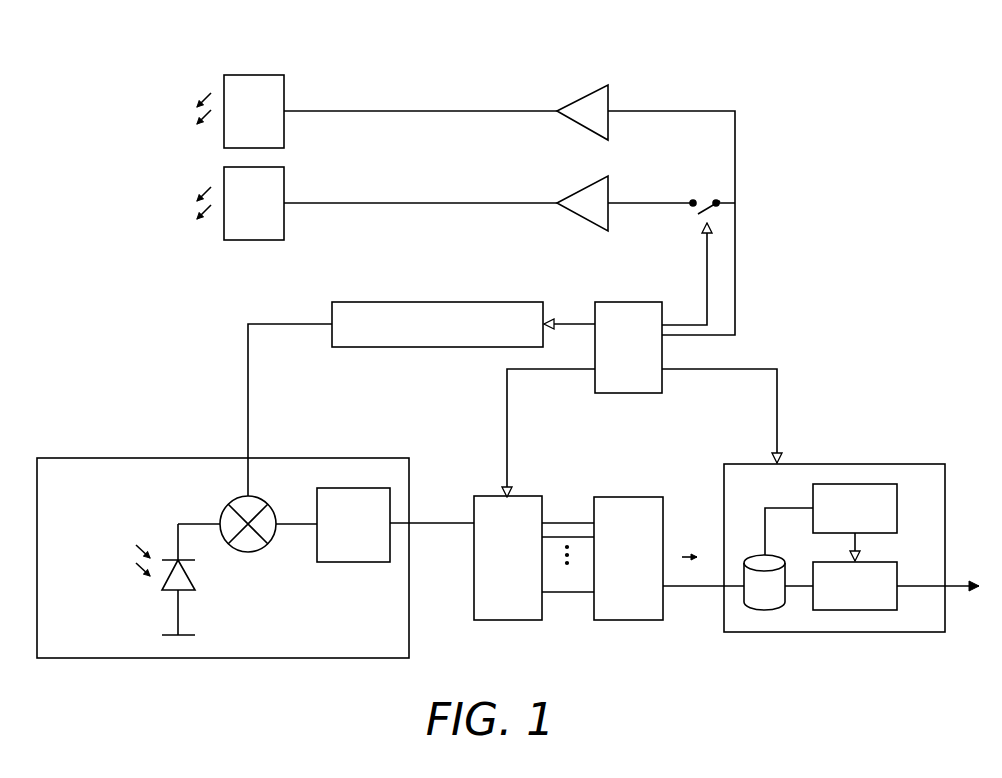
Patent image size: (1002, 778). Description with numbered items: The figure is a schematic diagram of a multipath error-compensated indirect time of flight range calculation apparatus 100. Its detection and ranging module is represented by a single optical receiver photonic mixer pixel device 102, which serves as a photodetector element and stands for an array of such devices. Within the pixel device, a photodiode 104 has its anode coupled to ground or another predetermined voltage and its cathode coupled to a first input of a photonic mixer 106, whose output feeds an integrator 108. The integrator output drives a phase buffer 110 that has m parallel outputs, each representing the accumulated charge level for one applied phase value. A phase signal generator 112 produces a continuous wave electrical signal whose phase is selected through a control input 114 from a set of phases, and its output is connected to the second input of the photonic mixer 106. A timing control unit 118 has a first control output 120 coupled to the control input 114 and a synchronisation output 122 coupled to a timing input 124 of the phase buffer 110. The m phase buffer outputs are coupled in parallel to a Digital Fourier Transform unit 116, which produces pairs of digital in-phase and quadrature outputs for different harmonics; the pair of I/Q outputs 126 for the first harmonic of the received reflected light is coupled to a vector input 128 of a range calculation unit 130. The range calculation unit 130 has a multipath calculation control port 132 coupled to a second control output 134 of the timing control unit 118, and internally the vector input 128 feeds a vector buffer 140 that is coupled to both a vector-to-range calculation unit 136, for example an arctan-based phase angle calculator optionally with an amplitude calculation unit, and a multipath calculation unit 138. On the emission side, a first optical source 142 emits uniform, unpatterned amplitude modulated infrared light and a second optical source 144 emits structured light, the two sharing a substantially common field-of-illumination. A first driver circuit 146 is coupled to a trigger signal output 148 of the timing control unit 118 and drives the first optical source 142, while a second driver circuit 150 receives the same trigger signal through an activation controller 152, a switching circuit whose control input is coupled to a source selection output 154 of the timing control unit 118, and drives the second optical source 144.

The indirect time of flight range calculation apparatus 100 is at (66, 88).
The optical receiver photonic mixer pixel device 102 is at (68, 458).
The photodiode 104 is at (162, 592).
The photonic mixer 106 is at (246, 555).
The integrator 108 is at (366, 563).
The phase buffer 110 is at (534, 558).
The phase signal generator 112 is at (355, 302).
The control input 114 is at (546, 320).
The Digital Fourier Transform unit 116 is at (628, 558).
The timing control unit 118 is at (628, 347).
The first control output 120 is at (594, 322).
The synchronisation output 122 is at (590, 376).
The timing input 124 is at (513, 494).
The pair of I/Q outputs 126 is at (665, 592).
The vector input 128 is at (722, 583).
The range calculation unit 130 is at (918, 464).
The multipath calculation control port 132 is at (782, 462).
The second control output 134 is at (667, 393).
The vector-to-range calculation unit 136 is at (865, 586).
The multipath calculation unit 138 is at (831, 522).
The vector buffer 140 is at (775, 612).
The first optical source 142 is at (256, 75).
The second optical source 144 is at (256, 243).
The first driver circuit 146 is at (575, 98).
The trigger signal output 148 is at (665, 341).
The second driver circuit 150 is at (575, 190).
The activation controller 152 is at (701, 200).
The source selection output 154 is at (665, 322).